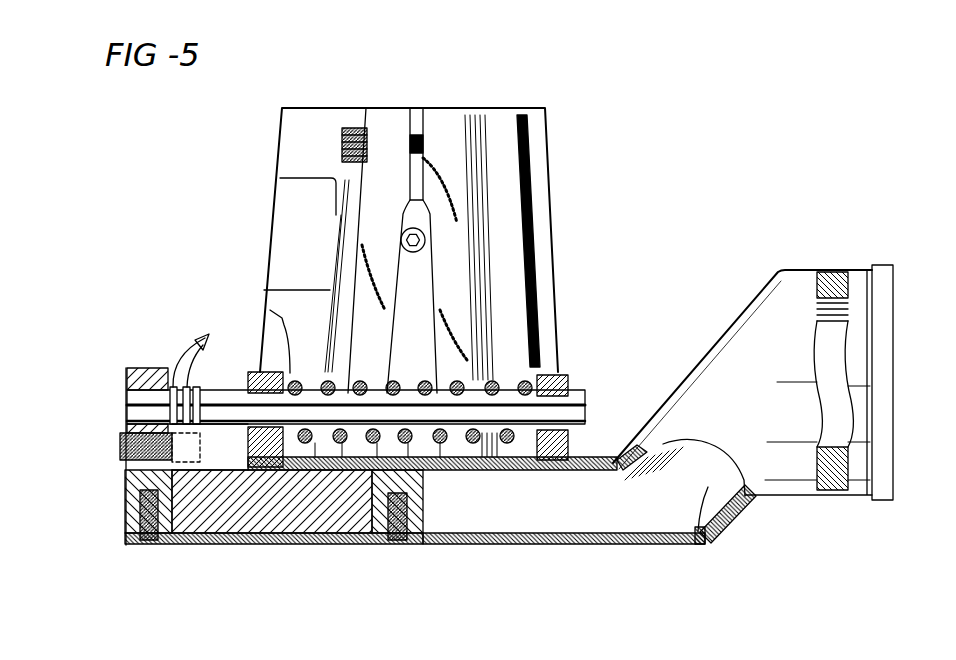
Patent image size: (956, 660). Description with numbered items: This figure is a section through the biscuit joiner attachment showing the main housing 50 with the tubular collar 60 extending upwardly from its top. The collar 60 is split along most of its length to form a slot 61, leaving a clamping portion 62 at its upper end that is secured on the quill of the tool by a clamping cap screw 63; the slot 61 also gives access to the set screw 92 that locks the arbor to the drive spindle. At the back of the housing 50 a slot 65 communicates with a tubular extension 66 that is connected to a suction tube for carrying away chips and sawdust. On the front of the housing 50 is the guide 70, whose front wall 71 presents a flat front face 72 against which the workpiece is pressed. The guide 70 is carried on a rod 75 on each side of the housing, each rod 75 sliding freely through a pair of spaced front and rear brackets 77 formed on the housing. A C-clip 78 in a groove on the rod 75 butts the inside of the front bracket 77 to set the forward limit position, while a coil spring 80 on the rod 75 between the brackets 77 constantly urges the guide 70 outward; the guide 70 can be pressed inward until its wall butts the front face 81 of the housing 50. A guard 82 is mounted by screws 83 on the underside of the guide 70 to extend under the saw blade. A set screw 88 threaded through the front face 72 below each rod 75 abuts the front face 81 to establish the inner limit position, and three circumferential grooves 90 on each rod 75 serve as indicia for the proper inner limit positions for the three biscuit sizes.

The main housing 50 is at (597, 458).
The tubular collar 60 is at (550, 156).
The slot 61 is at (400, 268).
The clamping portion 62 is at (447, 108).
The clamping cap screw 63 is at (342, 134).
The slot 65 is at (703, 548).
The tubular extension 66 is at (740, 338).
The guide 70 is at (170, 338).
The front wall 71 is at (140, 367).
The flat front face 72 is at (125, 488).
The rod 75 is at (585, 392).
The brackets 77 is at (258, 372).
The C-clip 78 is at (330, 330).
The coil spring 80 is at (360, 387).
The front face 81 is at (230, 545).
The guard 82 is at (613, 545).
The screws 83 is at (150, 545).
The set screw 88 is at (120, 440).
The circumferential grooves 90 is at (195, 366).
The set screw 92 is at (425, 243).